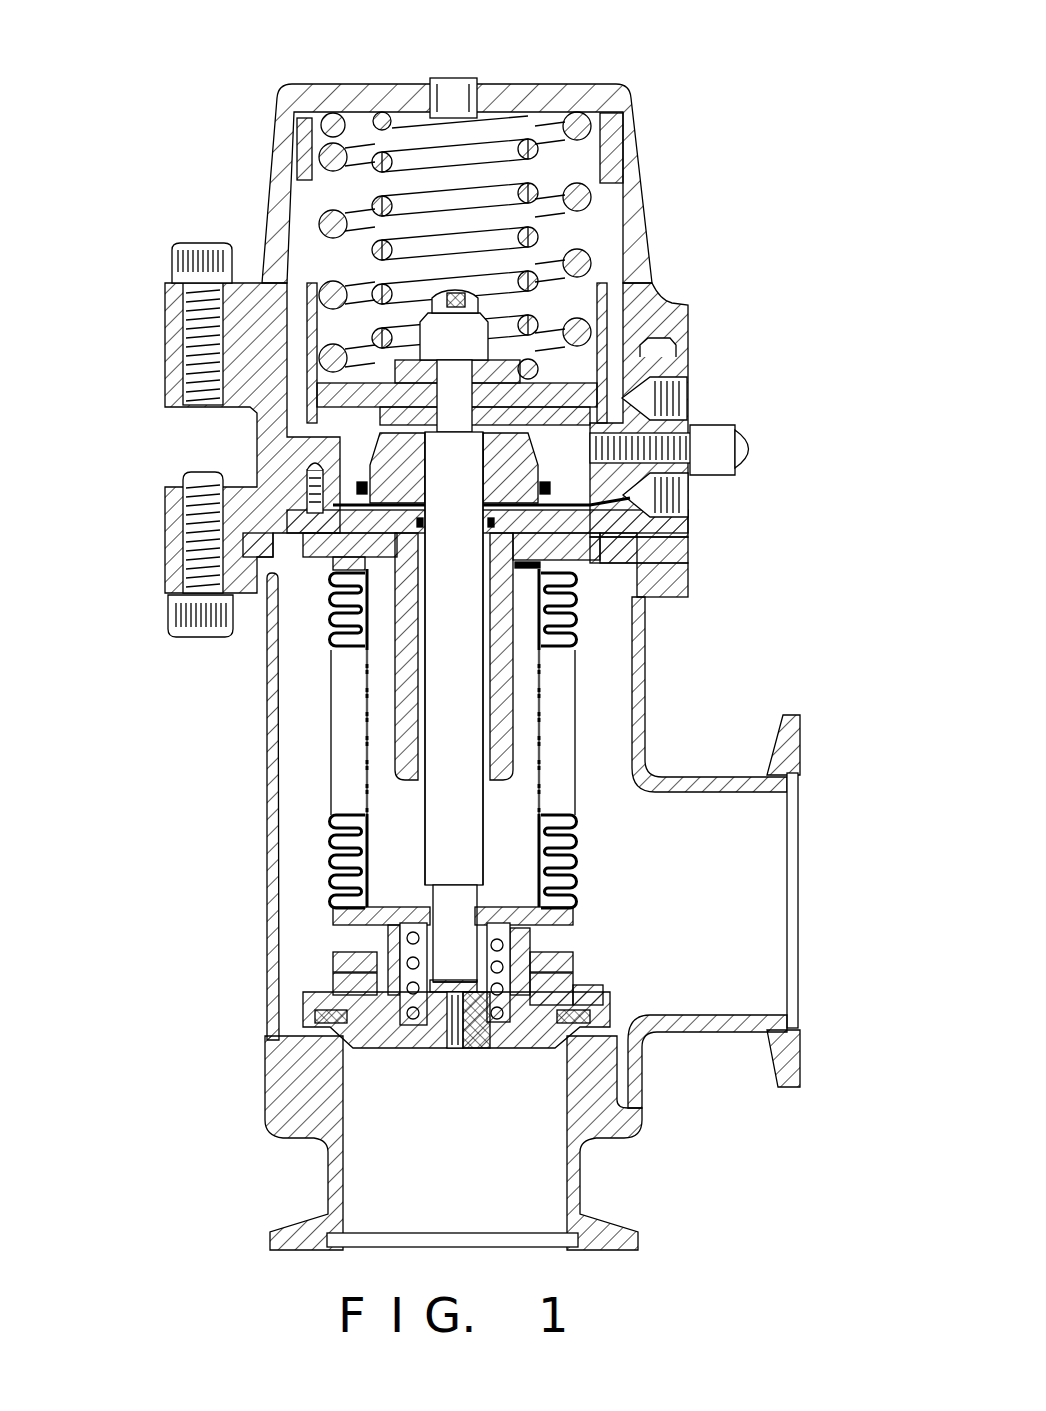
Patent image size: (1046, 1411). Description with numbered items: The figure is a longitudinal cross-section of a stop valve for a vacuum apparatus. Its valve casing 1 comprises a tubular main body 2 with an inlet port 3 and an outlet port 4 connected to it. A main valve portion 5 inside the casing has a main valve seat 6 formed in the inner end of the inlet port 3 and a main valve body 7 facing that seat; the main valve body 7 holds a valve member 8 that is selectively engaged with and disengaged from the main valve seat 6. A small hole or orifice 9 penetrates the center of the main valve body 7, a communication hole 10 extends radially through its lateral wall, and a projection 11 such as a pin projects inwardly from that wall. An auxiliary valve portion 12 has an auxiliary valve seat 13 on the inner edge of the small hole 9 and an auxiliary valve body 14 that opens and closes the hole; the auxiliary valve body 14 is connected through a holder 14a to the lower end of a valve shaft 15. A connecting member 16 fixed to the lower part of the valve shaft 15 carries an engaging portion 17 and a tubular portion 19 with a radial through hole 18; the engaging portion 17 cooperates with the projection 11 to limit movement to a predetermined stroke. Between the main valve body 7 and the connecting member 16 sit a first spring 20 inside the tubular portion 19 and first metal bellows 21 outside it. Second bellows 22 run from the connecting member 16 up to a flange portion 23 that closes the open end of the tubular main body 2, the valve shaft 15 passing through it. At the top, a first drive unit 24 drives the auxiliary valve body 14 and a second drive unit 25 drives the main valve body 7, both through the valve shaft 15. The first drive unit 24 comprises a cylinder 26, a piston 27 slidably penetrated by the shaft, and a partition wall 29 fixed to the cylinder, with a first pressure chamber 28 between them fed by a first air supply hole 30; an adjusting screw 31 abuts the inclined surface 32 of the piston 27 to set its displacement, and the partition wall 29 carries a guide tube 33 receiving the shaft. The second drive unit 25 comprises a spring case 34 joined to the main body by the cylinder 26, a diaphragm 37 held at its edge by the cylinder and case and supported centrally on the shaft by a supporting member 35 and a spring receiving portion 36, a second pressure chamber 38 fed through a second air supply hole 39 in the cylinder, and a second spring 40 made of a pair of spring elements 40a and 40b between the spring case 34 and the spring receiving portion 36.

The valve casing 1 is at (198, 860).
The tubular main body 2 is at (266, 762).
The inlet port 3 is at (416, 1212).
The outlet port 4 is at (760, 916).
The main valve portion 5 is at (295, 1019).
The main valve seat 6 is at (300, 1048).
The main valve body 7 is at (593, 992).
The valve member 8 is at (612, 1020).
The small hole (orifice) 9 is at (455, 1048).
The communication hole 10 is at (563, 975).
The projection 11 is at (318, 1016).
The auxiliary valve portion 12 is at (500, 1042).
The auxiliary valve seat 13 is at (474, 1048).
The auxiliary valve body 14 is at (472, 982).
The holder 14a is at (437, 978).
The valve shaft 15 is at (468, 718).
The connecting member 16 is at (345, 922).
The engaging portion 17 is at (381, 1040).
The radial through hole 18 is at (540, 940).
The tubular portion 19 is at (355, 952).
The first spring 20 is at (540, 905).
The first metal bellows 21 is at (345, 980).
The second bellows 22 is at (333, 843).
The flange portion 23 is at (643, 552).
The first drive unit 24 is at (195, 505).
The second drive unit 25 is at (296, 377).
The cylinder 26 is at (263, 457).
The piston 27 is at (390, 465).
The first pressure chamber 28 is at (588, 550).
The partition wall 29 is at (310, 555).
The first air supply hole 30 is at (688, 532).
The adjusting screw 31 is at (717, 470).
The inclined surface 32 is at (672, 500).
The guide tube 33 is at (400, 668).
The spring case 34 is at (272, 198).
The supporting member 35 is at (680, 413).
The spring receiving portion 36 is at (613, 318).
The diaphragm 37 is at (625, 300).
The second pressure chamber 38 is at (640, 355).
The second air supply hole 39 is at (673, 400).
The second spring 40 is at (511, 215).
The spring element 40a is at (590, 128).
The spring element 40b is at (536, 147).